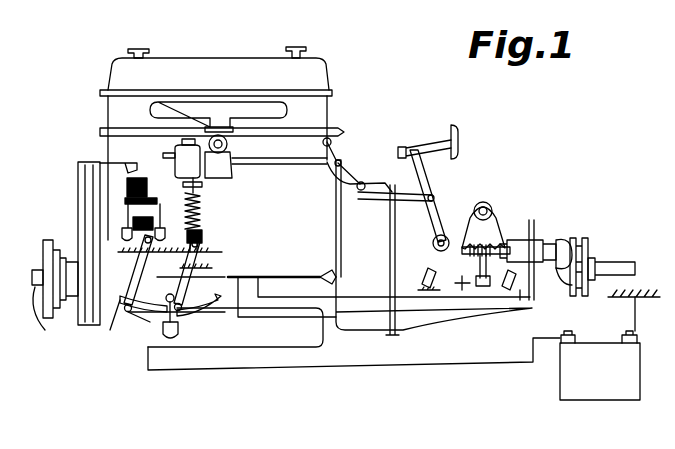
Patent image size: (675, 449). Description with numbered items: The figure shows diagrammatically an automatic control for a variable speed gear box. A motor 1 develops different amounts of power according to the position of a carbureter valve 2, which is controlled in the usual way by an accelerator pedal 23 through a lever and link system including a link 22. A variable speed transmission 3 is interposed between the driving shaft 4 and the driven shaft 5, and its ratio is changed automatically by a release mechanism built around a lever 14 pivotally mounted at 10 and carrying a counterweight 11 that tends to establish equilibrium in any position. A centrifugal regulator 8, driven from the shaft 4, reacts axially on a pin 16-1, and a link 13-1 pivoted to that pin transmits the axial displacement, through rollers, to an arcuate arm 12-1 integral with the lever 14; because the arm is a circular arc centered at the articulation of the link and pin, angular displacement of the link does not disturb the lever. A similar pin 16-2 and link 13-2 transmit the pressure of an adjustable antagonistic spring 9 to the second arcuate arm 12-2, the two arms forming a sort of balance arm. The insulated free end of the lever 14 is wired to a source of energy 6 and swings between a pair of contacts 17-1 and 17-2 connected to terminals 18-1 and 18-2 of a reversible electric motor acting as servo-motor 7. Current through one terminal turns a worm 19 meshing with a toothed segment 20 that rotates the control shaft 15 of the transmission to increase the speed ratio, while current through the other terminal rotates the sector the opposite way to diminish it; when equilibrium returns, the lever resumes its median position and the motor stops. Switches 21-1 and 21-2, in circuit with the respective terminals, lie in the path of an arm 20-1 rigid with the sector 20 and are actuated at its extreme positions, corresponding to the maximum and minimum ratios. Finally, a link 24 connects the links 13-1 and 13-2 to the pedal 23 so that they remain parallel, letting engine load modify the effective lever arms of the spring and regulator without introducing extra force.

The motor 1 is at (318, 101).
The carbureter valve 2 is at (220, 136).
The variable speed transmission 3 is at (520, 248).
The driving shaft 4 is at (35, 296).
The driven shaft 5 is at (615, 266).
The source of energy 6 is at (578, 376).
The servo-motor 7 is at (534, 236).
The centrifugal regulator 8 is at (123, 236).
The antagonistic spring 9 is at (196, 204).
The pivot 10 is at (160, 322).
The counterweight 11 is at (172, 336).
The arcuate arm 12-1 is at (121, 330).
The arcuate arm 12-2 is at (208, 306).
The link 13-1 is at (148, 252).
The link 13-2 is at (200, 272).
The lever 14 is at (160, 323).
The control shaft 15 is at (488, 205).
The pin 16-1 is at (128, 215).
The pin 16-2 is at (200, 228).
The contact 17-1 is at (142, 275).
The contact 17-2 is at (208, 262).
The terminal 18-1 is at (548, 274).
The terminal 18-2 is at (549, 233).
The worm 19 is at (498, 224).
The toothed segment 20 is at (468, 214).
The arm 20-1 is at (465, 290).
The switch 21-1 is at (431, 290).
The switch 21-2 is at (533, 303).
The link 22 is at (318, 129).
The accelerator pedal 23 is at (457, 133).
The link 24 is at (276, 277).